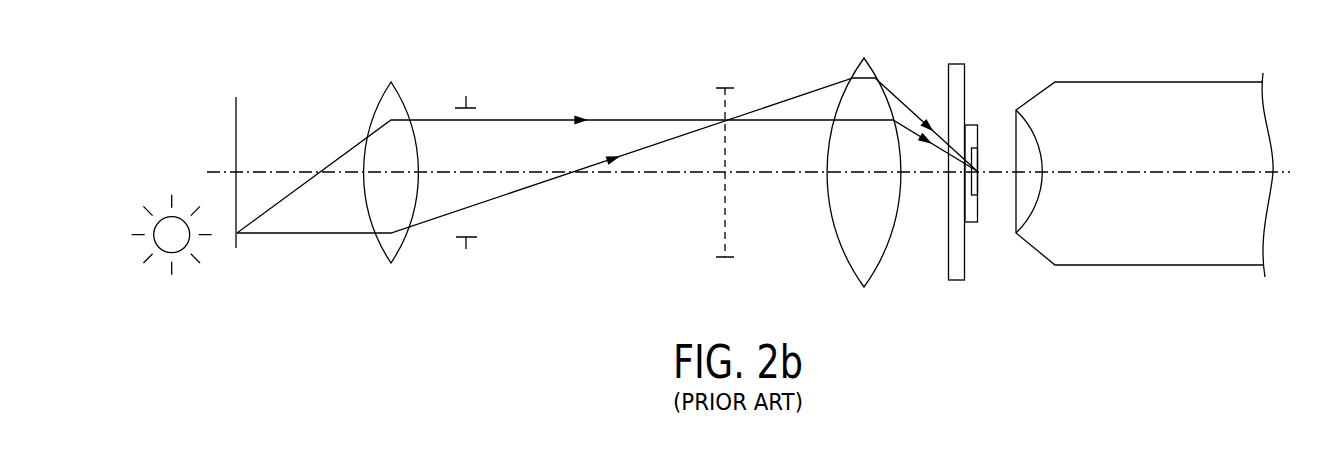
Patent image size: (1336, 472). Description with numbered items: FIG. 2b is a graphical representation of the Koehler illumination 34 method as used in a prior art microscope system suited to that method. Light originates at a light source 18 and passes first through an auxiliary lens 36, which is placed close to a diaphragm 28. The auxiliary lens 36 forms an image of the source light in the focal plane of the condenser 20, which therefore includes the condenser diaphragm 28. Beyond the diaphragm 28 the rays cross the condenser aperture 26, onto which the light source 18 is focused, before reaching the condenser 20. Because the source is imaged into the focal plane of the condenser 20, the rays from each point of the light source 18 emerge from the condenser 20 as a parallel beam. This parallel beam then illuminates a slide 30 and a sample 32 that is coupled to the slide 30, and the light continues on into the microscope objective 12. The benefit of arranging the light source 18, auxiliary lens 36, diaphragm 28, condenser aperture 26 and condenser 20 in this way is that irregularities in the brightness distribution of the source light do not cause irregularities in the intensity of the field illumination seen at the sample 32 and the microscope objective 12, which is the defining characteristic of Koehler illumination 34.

The microscope objective 12 is at (1160, 82).
The light source 18 is at (164, 217).
The condenser 20 is at (849, 266).
The condenser aperture 26 is at (723, 88).
The diaphragm 28 is at (466, 98).
The slide 30 is at (955, 64).
The sample 32 is at (980, 167).
The Koehler illumination 34 is at (1320, 130).
The auxiliary lens 36 is at (376, 103).